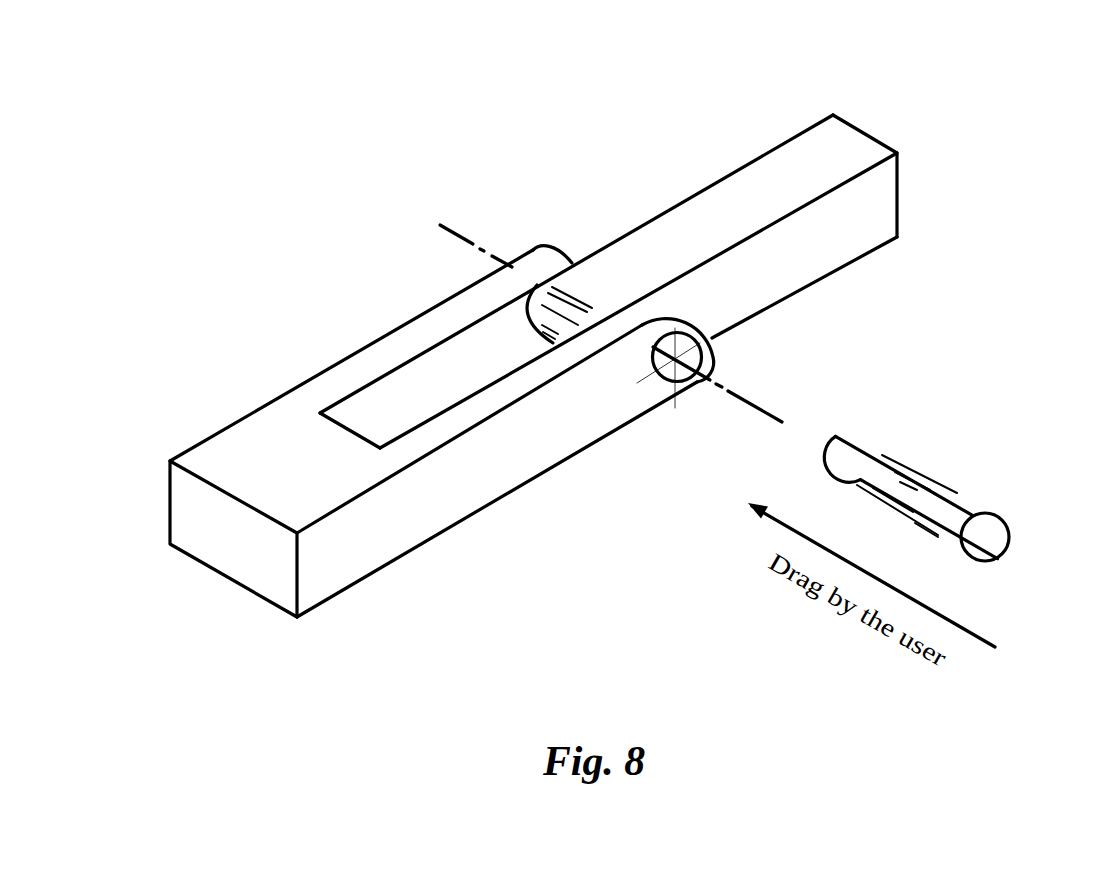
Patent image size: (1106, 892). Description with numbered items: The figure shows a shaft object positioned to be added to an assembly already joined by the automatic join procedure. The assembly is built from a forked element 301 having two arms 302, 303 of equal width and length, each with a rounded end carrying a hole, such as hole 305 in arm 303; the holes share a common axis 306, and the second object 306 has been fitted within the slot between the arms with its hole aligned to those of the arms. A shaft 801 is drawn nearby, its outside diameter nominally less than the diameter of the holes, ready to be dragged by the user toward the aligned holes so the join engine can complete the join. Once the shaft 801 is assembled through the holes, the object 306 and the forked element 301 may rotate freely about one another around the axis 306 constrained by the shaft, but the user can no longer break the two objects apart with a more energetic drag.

The forked element 301 is at (270, 421).
The arm 302 is at (423, 325).
The arm 303 is at (558, 415).
The hole 305 is at (693, 383).
The object 306 is at (846, 130).
The shaft 801 is at (957, 507).